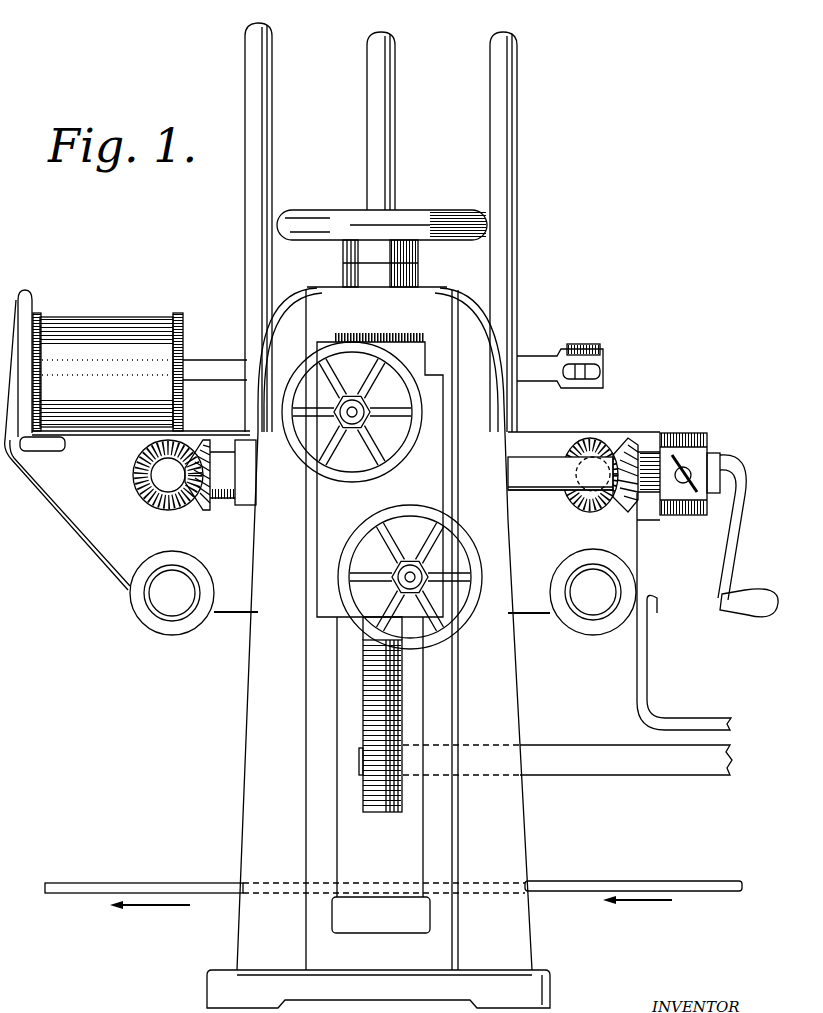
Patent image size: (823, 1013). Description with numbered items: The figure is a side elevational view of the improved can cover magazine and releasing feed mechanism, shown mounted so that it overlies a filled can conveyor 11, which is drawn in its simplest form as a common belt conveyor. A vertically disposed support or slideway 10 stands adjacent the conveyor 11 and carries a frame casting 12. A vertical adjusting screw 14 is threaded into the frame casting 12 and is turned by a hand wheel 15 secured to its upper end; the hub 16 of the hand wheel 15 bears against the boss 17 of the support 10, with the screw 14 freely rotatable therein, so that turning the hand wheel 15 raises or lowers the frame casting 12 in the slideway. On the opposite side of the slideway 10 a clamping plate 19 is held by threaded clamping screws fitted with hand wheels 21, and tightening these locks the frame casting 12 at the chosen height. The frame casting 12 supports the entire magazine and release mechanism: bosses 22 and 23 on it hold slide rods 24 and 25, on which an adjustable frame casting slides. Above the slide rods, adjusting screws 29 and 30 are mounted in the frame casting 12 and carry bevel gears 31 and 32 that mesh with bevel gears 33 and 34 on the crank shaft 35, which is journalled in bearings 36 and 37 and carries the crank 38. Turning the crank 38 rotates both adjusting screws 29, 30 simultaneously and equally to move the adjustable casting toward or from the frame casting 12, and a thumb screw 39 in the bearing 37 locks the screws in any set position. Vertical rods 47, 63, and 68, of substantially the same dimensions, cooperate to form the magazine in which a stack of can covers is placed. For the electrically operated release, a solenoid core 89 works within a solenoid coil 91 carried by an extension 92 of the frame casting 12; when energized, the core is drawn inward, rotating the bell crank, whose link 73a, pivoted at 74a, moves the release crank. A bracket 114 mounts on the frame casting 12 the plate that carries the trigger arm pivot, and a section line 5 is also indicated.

The section line 5- 5 is at (347, 180).
The vertically disposed support or slideway 10 is at (268, 745).
The conveyor 11 is at (88, 882).
The frame casting 12 is at (100, 548).
The vertical adjusting screw 14 is at (375, 814).
The hand wheel 15 is at (311, 211).
The hub 16 is at (418, 253).
The boss 17 is at (357, 277).
The clamping plate 19 is at (364, 509).
The hand wheels 21 is at (413, 448).
The boss 22 is at (155, 630).
The boss 23 is at (585, 633).
The slide rod 24 is at (153, 597).
The slide rod 25 is at (602, 590).
The adjusting screw 29 is at (157, 473).
The adjusting screw 30 is at (605, 443).
The bevel gear 31 is at (148, 498).
The bevel gear 32 is at (588, 438).
The bevel gear 33 is at (197, 515).
The bevel gear 34 is at (627, 507).
The crank shaft 35 is at (527, 488).
The bearing 36 is at (244, 440).
The bearing 37 is at (690, 434).
The crank 38 is at (727, 553).
The thumb screw 39 is at (690, 468).
The vertical rod 47 is at (397, 97).
The vertical rod 63 is at (273, 118).
The vertical rod 68 is at (513, 113).
The link 73a is at (603, 372).
The pivot 74a is at (600, 347).
The solenoid core 89 is at (207, 370).
The solenoid coil 91 is at (123, 333).
The extension 92 is at (33, 298).
The bracket 114 is at (647, 683).